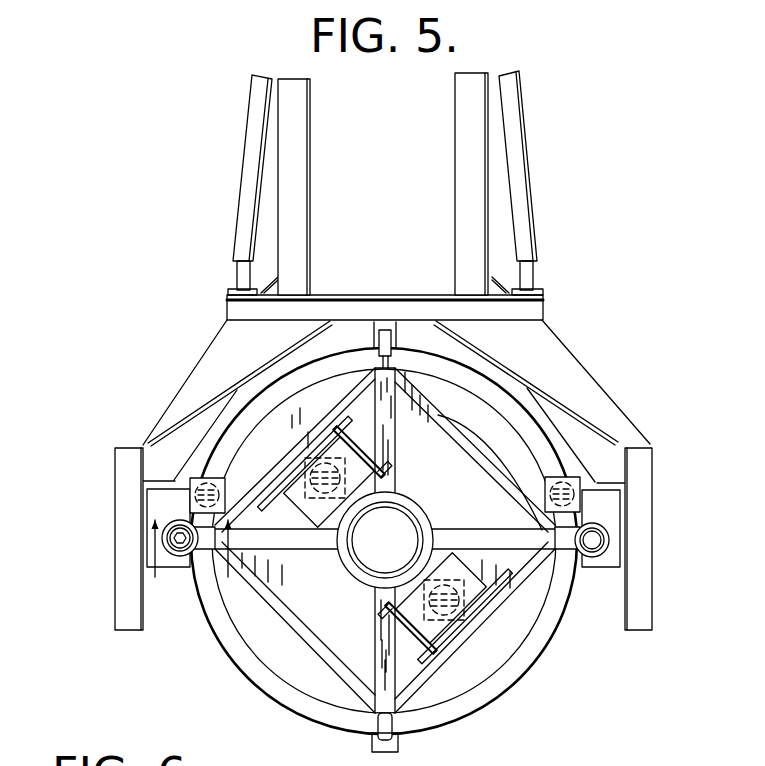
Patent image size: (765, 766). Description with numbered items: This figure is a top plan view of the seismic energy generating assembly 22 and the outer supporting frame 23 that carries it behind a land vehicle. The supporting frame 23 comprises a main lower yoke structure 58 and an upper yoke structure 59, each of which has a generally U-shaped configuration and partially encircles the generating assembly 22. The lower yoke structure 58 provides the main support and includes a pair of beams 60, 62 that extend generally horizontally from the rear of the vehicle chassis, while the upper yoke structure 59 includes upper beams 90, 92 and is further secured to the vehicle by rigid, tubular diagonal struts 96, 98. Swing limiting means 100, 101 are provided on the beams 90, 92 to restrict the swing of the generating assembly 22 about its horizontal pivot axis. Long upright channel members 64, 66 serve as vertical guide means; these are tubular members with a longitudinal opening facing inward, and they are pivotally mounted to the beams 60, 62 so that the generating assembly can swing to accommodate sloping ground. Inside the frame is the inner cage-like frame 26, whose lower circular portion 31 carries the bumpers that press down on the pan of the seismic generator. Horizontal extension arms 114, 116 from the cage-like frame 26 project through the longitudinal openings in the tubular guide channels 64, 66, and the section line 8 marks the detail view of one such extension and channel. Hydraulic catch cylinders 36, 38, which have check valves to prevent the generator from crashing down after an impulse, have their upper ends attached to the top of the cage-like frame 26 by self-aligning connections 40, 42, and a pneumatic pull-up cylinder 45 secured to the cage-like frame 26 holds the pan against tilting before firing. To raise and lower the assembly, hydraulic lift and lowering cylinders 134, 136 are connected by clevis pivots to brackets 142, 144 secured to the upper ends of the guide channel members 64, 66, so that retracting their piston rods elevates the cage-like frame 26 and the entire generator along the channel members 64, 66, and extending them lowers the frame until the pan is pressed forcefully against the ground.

The section line 8- 8 is at (195, 562).
The seismic energy generating assembly 22 is at (583, 688).
The outer supporting frame 23 is at (567, 215).
The inner cage-like frame 26 is at (287, 637).
The lower circular portion 31 is at (490, 697).
The hydraulic catch cylinder 36 is at (324, 458).
The hydraulic catch cylinder 38 is at (454, 610).
The self-aligning connection 40 is at (296, 470).
The self-aligning connection 42 is at (485, 608).
The pneumatic pull-up cylinder 45 is at (393, 320).
The lower yoke structure 58 is at (150, 445).
The upper yoke structure 59 is at (150, 397).
The beam 60 is at (303, 196).
The beam 62 is at (457, 196).
The upright channel member 64 is at (180, 557).
The upright channel member 66 is at (597, 566).
The upper beam 90 is at (200, 358).
The upper beam 92 is at (567, 358).
The rigid diagonal strut 96 is at (241, 160).
The rigid diagonal strut 98 is at (522, 160).
The swing limiting means 100 is at (115, 560).
The swing limiting means 101 is at (652, 540).
The horizontal extension arm 114 is at (202, 550).
The horizontal extension arm 116 is at (570, 556).
The hydraulic lift and lowering cylinder 134 is at (200, 504).
The hydraulic lift and lowering cylinder 136 is at (580, 497).
The bracket 142 is at (157, 510).
The bracket 144 is at (612, 518).